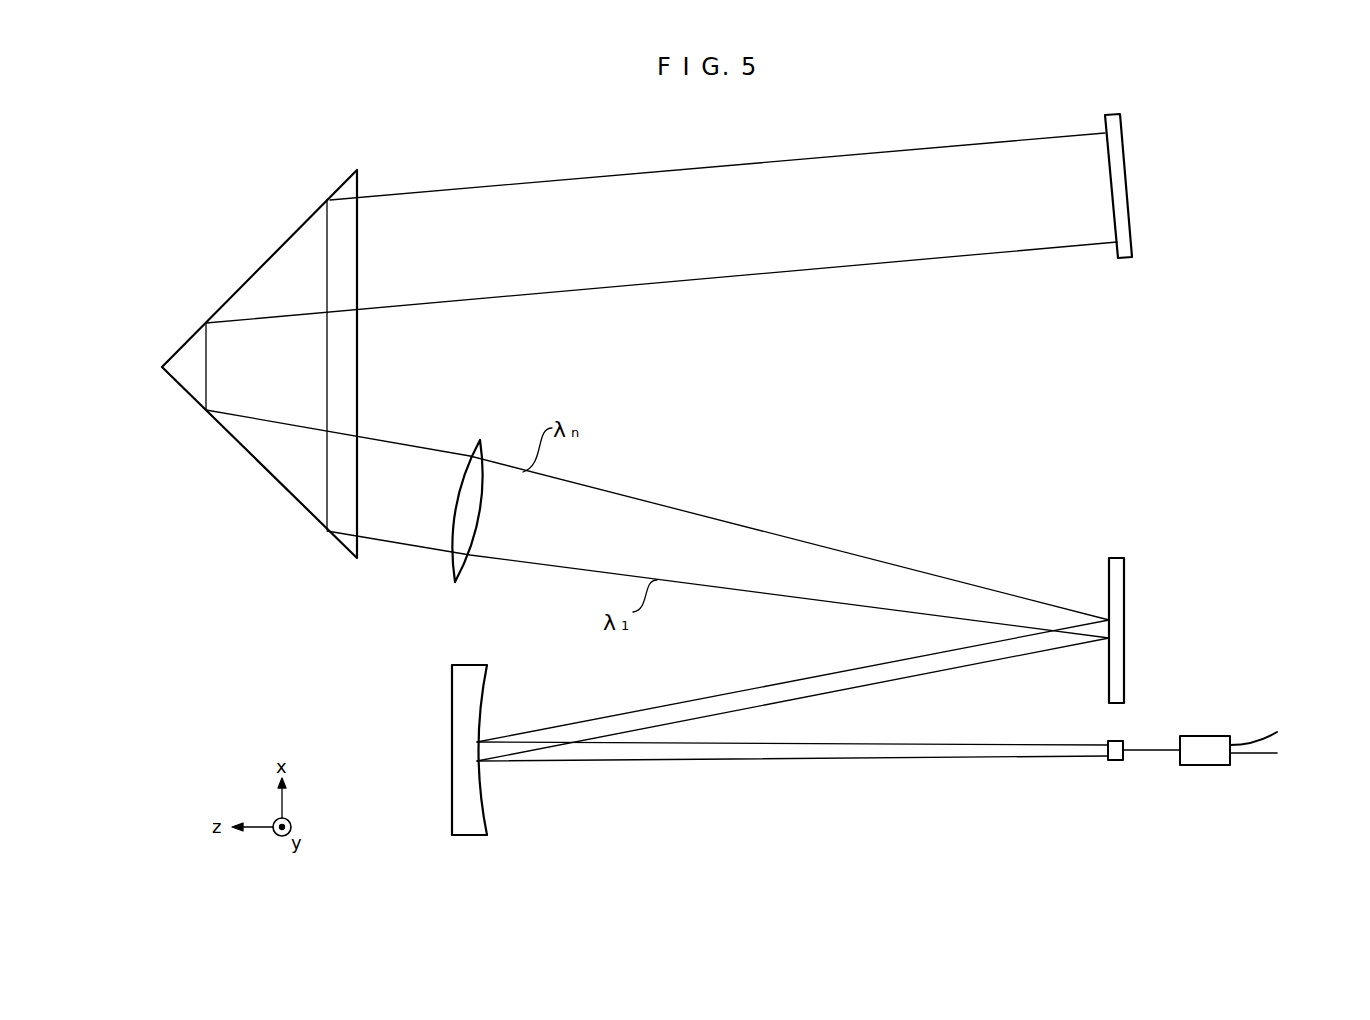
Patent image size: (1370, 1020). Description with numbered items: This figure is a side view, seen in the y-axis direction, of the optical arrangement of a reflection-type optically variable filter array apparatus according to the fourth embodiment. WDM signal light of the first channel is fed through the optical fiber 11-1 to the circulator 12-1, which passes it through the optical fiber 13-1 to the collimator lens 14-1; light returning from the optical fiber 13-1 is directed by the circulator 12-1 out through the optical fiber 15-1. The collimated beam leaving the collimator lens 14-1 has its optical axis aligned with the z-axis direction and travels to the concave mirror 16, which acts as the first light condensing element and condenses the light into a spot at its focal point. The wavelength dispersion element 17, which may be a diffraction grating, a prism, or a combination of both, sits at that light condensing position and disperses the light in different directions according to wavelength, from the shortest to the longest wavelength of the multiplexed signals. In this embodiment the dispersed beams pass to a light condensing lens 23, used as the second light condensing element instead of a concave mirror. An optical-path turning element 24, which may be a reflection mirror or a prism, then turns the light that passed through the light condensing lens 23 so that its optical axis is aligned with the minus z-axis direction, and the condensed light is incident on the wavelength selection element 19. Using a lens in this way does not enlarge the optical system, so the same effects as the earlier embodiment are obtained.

The optical-path turning element 24 is at (257, 270).
The wavelength selection element 19 is at (1128, 160).
The light condensing lens 23 is at (453, 552).
The wavelength dispersion element 17 is at (1125, 605).
The concave mirror 16 is at (452, 703).
The collimator lens 14-1 is at (1112, 760).
The optical fiber 13-1 is at (1160, 750).
The circulator 12-1 is at (1208, 765).
The optical fiber 11-1 is at (1293, 715).
The optical fiber 15-1 is at (1293, 762).